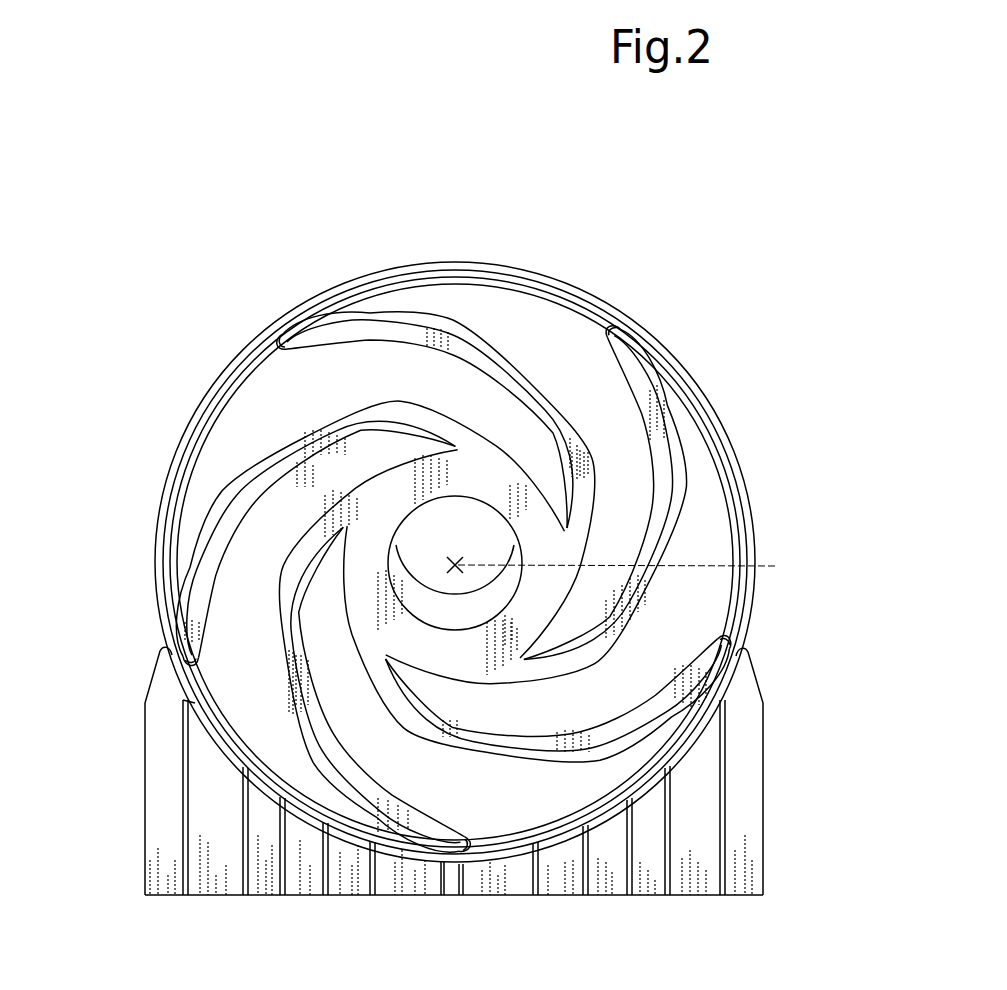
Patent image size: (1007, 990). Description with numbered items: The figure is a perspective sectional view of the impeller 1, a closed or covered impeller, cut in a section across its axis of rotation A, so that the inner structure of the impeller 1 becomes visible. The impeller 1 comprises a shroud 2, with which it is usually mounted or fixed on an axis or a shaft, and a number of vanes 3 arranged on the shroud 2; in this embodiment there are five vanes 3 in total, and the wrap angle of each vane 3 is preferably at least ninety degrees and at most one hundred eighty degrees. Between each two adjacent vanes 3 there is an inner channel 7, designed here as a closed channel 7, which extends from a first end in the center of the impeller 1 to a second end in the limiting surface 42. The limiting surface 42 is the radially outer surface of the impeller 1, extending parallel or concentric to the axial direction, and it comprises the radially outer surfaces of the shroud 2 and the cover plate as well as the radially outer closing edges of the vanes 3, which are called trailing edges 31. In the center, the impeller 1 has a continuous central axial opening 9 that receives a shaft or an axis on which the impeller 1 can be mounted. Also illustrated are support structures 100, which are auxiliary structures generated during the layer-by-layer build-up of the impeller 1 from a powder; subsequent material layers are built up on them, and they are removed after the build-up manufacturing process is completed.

The impeller 1 is at (726, 187).
The shroud 2 is at (246, 412).
The vanes 3 is at (393, 332).
The trailing edges 31 is at (621, 330).
The limiting surface 42 is at (541, 268).
The channel 7 is at (575, 364).
The central axial opening 9 is at (427, 537).
The axis of rotation A is at (628, 564).
The support structures 100 is at (135, 815).